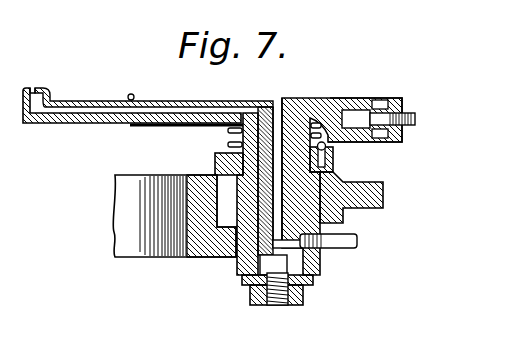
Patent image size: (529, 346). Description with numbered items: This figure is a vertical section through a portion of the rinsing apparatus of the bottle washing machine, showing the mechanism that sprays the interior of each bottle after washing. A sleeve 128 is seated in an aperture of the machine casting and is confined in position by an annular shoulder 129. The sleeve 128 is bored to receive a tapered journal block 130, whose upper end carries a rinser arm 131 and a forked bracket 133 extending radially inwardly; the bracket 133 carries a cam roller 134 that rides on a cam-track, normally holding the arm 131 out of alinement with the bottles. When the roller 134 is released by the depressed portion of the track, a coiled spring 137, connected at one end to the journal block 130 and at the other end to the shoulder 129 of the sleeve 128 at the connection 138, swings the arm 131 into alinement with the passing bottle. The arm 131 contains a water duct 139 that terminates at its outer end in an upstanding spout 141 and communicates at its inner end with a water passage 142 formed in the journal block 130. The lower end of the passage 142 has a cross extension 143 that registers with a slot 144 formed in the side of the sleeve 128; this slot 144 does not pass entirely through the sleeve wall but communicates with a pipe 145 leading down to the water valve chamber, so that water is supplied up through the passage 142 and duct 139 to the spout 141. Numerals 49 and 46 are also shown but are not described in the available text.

The upstanding spouts 141 is at (37, 89).
The rinser arm 131 is at (95, 123).
The water duct 139 is at (190, 98).
The coiled spring 137 is at (229, 132).
The annular shoulder 129 is at (215, 162).
The base body 49 is at (172, 235).
The sleeve 128 is at (240, 262).
The water passage 142 is at (276, 100).
The tapered journal block 130 is at (291, 117).
The forked bracket 133 is at (350, 99).
The cam roller 134 is at (413, 110).
The pipe 145 is at (359, 241).
The flange 46 is at (384, 203).
The spring connection 138 is at (335, 160).
The slot 144 is at (322, 258).
The cross extension 143 is at (322, 268).